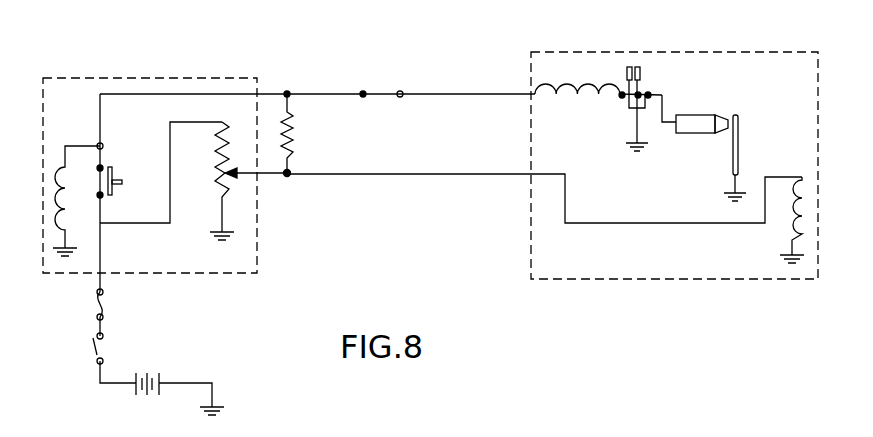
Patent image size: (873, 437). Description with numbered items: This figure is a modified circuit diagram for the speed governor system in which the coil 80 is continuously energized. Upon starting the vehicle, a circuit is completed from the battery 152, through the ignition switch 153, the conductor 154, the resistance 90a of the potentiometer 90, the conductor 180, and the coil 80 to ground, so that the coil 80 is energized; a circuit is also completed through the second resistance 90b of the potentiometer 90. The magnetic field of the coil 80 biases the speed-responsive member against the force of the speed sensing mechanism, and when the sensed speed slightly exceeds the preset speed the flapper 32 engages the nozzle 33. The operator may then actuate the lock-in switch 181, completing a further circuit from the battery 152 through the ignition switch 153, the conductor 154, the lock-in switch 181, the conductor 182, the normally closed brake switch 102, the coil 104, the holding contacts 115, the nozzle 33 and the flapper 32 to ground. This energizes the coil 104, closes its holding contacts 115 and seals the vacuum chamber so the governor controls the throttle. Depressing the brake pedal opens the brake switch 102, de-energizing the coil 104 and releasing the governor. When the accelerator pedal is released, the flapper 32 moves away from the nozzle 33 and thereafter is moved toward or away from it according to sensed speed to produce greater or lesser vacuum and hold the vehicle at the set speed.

The conductor 182 is at (199, 78).
The lock-in switch 181 is at (113, 168).
The potentiometer 90 is at (237, 181).
The resistance of the potentiometer 90a is at (220, 146).
The resistance of the potentiometer 90b is at (206, 202).
The brake switch 102 is at (385, 94).
The conductor 180 is at (392, 174).
The coil 104 is at (588, 82).
The holding contacts 115 is at (637, 67).
The nozzle 33 is at (700, 115).
The flapper 32 is at (739, 140).
The coil 80 is at (793, 218).
The conductor 154 is at (100, 281).
The ignition switch 153 is at (97, 352).
The battery 152 is at (152, 373).